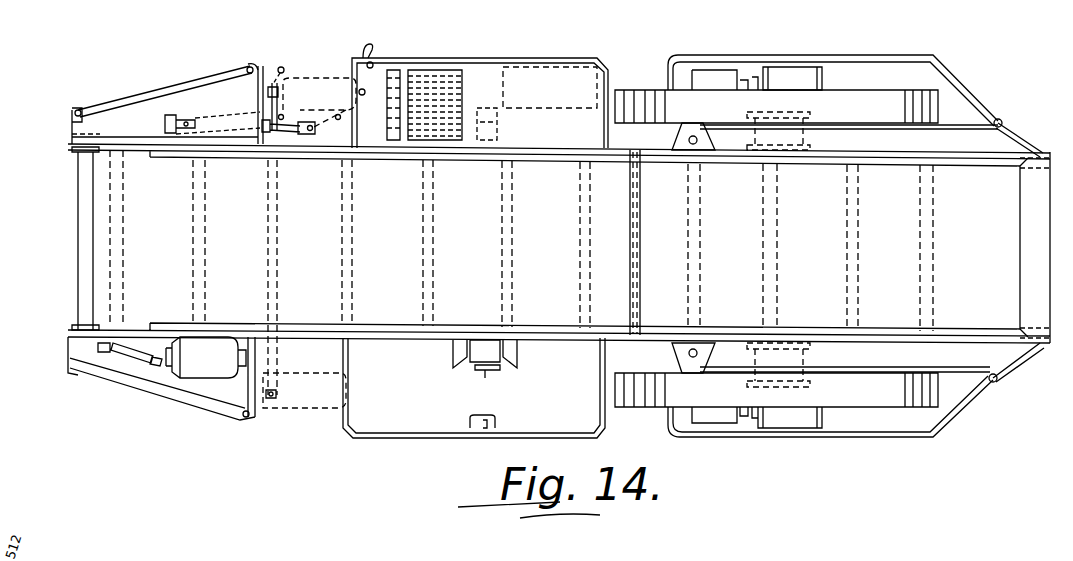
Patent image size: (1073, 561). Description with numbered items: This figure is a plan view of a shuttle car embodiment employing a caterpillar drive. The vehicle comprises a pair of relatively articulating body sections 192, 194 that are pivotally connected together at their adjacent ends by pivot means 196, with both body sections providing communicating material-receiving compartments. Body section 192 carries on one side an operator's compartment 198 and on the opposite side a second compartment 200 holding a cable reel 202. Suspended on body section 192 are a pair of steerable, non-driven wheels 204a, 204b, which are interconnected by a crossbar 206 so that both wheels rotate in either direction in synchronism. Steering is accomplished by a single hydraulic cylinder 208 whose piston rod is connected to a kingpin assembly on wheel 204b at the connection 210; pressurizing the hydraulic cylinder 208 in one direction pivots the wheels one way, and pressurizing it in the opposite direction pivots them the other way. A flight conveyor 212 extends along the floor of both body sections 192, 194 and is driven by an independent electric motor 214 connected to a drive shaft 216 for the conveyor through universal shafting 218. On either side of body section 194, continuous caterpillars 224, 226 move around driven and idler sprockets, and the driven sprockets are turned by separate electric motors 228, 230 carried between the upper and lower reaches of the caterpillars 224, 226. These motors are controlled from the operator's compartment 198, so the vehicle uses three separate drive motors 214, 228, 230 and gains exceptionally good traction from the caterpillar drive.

The body section 192 is at (366, 256).
The body section 194 is at (789, 256).
The pivot means 196 is at (643, 270).
The operator's compartment 198 is at (425, 410).
The second compartment 200 is at (512, 58).
The cable reel 202 is at (437, 70).
The steerable non-driven wheel 204a is at (305, 410).
The steerable non-driven wheel 204b is at (301, 78).
The crossbar 206 is at (270, 280).
The hydraulic cylinder 208 is at (236, 121).
The kingpin assembly connection 210 is at (310, 135).
The flight conveyor 212 is at (530, 172).
The electric motor 214 is at (205, 365).
The drive shaft 216 is at (82, 271).
The universal shafting 218 is at (134, 360).
The continuous caterpillar 224 is at (916, 407).
The continuous caterpillar 226 is at (897, 90).
The electric motor 228 is at (790, 418).
The electric motor 230 is at (800, 67).